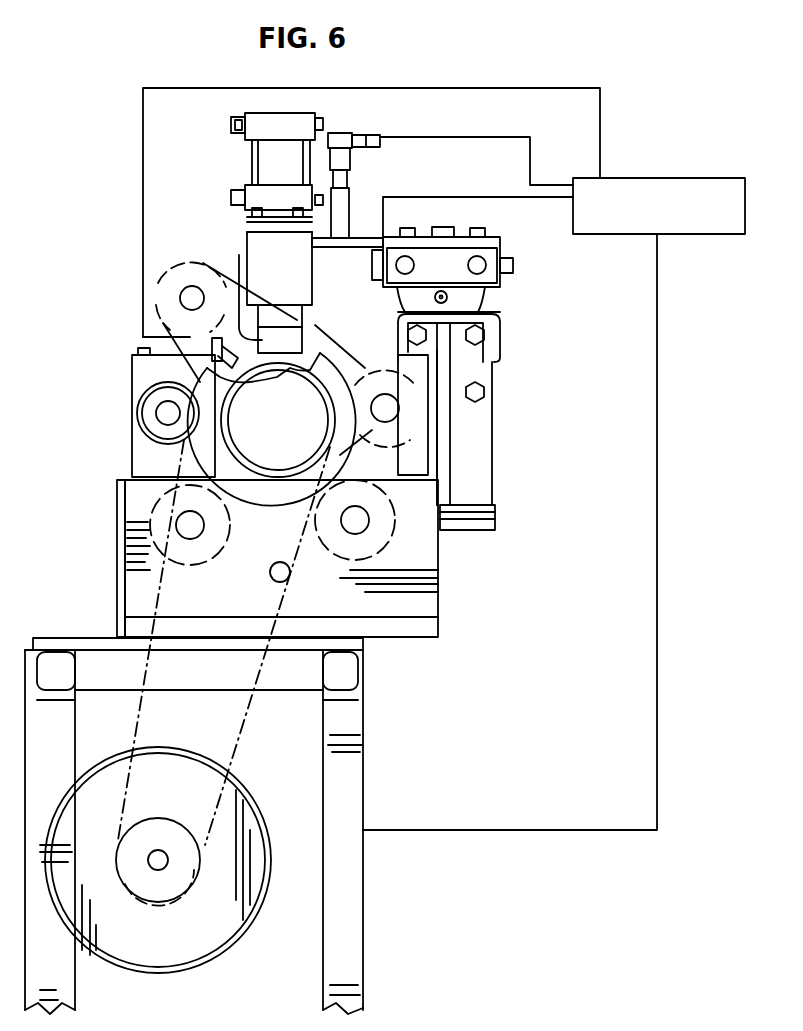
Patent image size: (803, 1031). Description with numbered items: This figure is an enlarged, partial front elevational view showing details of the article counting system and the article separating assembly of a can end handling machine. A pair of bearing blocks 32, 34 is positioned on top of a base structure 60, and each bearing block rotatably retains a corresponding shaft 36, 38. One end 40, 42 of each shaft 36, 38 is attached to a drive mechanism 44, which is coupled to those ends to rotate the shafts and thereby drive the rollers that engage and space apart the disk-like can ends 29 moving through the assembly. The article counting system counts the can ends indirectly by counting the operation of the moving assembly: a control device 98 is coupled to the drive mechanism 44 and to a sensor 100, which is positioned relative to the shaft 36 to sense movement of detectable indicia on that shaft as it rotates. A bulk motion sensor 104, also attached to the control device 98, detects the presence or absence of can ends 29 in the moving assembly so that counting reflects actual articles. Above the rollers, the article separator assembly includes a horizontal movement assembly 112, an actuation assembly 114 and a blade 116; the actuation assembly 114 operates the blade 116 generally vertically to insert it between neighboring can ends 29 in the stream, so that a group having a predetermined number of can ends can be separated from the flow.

The can end 29 is at (305, 365).
The bearing block 32 is at (135, 447).
The bearing block 34 is at (433, 458).
The shaft 36 is at (148, 392).
The shaft 38 is at (415, 440).
The end of shaft 40 is at (166, 411).
The end of shaft 42 is at (417, 413).
The drive mechanism 44 is at (238, 937).
The base structure 60 is at (130, 483).
The control device 98 is at (680, 178).
The sensor 100 is at (455, 310).
The bulk motion sensor 104 is at (205, 340).
The horizontal movement assembly 112 is at (524, 258).
The actuation assembly 114 is at (243, 163).
The blade 116 is at (239, 255).